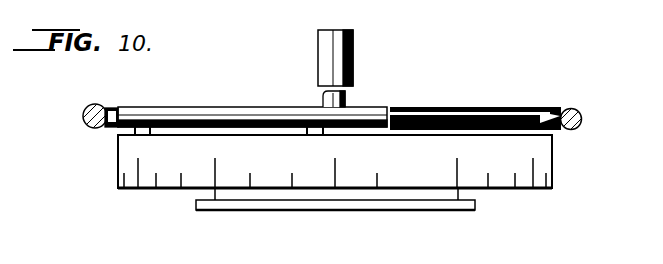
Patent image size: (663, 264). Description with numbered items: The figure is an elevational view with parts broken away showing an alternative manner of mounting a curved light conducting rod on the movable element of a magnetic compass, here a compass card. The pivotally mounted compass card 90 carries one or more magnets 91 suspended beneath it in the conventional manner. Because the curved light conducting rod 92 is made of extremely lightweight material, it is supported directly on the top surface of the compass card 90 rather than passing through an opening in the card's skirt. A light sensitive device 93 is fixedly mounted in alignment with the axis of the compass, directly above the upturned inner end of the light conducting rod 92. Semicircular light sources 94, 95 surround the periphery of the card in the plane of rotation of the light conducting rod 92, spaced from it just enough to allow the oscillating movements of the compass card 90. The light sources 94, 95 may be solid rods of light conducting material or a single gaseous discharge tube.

The compass card 90 is at (523, 188).
The magnet 91 is at (397, 211).
The curved light conducting rod 92 is at (200, 107).
The light sensitive device 93 is at (353, 30).
The semicircular light source 94 is at (83, 113).
The semicircular light source 95 is at (577, 106).